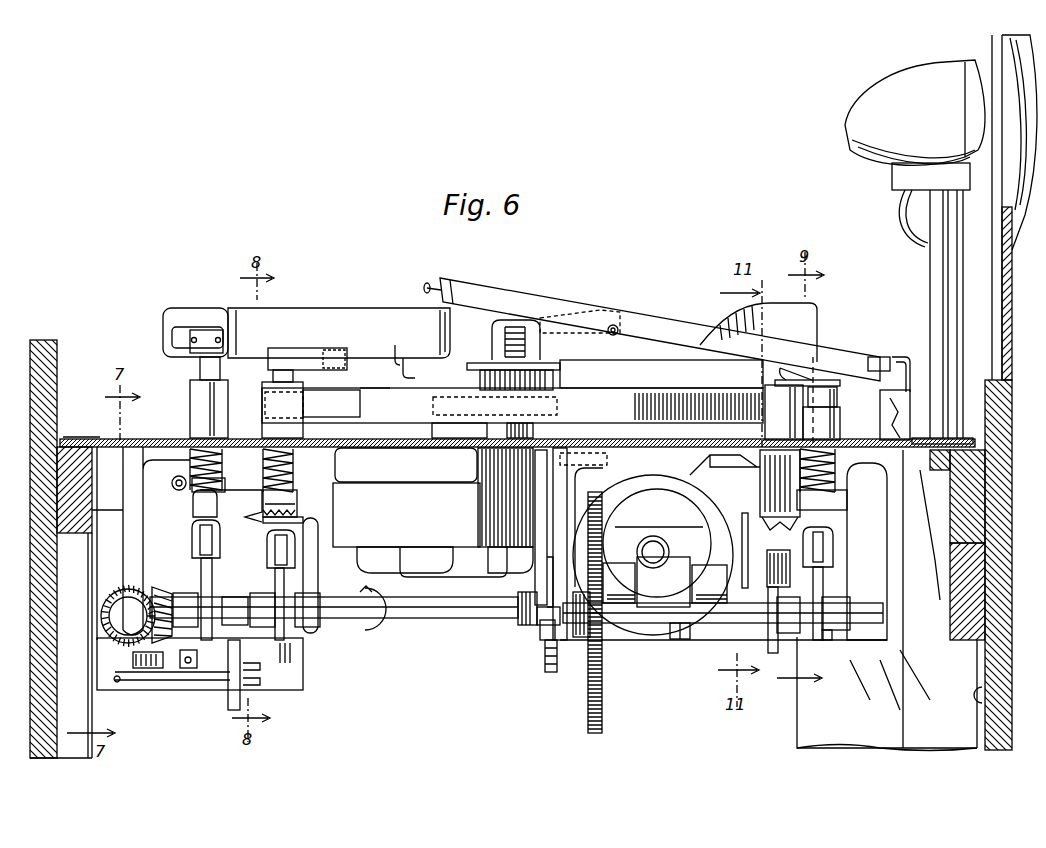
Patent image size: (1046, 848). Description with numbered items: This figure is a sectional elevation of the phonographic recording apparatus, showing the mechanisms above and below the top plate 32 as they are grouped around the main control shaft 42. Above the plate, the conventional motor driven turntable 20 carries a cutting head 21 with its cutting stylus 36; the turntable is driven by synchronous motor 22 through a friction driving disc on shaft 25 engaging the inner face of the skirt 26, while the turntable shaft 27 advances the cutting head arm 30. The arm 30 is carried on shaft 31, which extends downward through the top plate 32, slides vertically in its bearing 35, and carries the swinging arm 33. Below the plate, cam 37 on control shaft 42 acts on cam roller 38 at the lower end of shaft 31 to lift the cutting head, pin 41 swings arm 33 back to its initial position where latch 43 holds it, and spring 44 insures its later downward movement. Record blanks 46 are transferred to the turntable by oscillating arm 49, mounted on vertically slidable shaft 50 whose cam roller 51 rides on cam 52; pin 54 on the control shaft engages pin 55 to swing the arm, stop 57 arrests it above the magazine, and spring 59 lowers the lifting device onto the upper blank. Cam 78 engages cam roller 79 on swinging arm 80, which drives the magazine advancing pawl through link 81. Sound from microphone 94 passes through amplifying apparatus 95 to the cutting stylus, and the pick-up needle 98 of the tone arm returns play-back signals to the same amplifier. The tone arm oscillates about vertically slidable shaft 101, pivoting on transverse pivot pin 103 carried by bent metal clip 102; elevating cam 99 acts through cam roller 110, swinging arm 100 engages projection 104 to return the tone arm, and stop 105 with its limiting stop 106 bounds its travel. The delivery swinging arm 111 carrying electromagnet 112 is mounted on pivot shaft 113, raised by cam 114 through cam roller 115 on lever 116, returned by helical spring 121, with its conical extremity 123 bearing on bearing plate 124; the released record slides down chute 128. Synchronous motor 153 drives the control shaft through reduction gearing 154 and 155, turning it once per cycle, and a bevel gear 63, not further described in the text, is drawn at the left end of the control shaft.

The turntable 20 is at (672, 424).
The cutting head 21 is at (395, 345).
The synchronous motor 22 is at (398, 532).
The shaft 25 is at (457, 430).
The skirt 26 is at (608, 420).
The shaft 27 is at (533, 433).
The cutting head arm 30 is at (305, 303).
The shaft 31 is at (203, 368).
The top plate 32 is at (100, 436).
The swinging arm 33 is at (264, 512).
The bearing 35 is at (226, 418).
The cutting stylus 36 is at (421, 372).
The cam 37 is at (220, 690).
The cam roller 38 is at (192, 545).
The pin 41 is at (233, 708).
The control shaft 42 is at (212, 610).
The latch 43 is at (227, 500).
The spring 44 is at (222, 455).
The record blanks 46 is at (388, 390).
The oscillating arm 49 is at (320, 336).
The vertically slidable shaft 50 is at (274, 375).
The cam roller 51 is at (267, 558).
The cam 52 is at (285, 587).
The pin 54 is at (318, 562).
The pin 55 is at (346, 507).
The stop 57 is at (353, 473).
The spring 59 is at (312, 440).
The bevel gear 63 is at (157, 590).
The cam 78 is at (545, 657).
The cam roller 79 is at (540, 630).
The swinging arm 80 is at (535, 575).
The link 81 is at (518, 600).
The microphone 94 is at (890, 88).
The amplifying apparatus 95 is at (515, 300).
The pick-up needle 98 is at (450, 302).
The elevating cam 99 is at (822, 648).
The swinging arm 100 is at (830, 587).
The vertically slidable shaft 101 is at (838, 399).
The bent metal clip 102 is at (787, 375).
The transverse pivot pin 103 is at (823, 360).
The projection 104 is at (850, 480).
The stop 105 is at (912, 370).
The limiting stop 106 is at (880, 357).
The cam roller 110 is at (835, 548).
The swinging arm 111 is at (600, 342).
The electromagnet 112 is at (497, 378).
The pivot shaft 113 is at (768, 425).
The cam 114 is at (770, 648).
The cam roller 115 is at (767, 600).
The lever 116 is at (742, 590).
The helical spring 121 is at (762, 524).
The conical extremity 123 is at (773, 540).
The bearing plate 124 is at (790, 571).
The chute 128 is at (880, 749).
The synchronous motor 153 is at (688, 515).
The reduction gearing 154 is at (670, 597).
The reduction gearing 155 is at (588, 685).